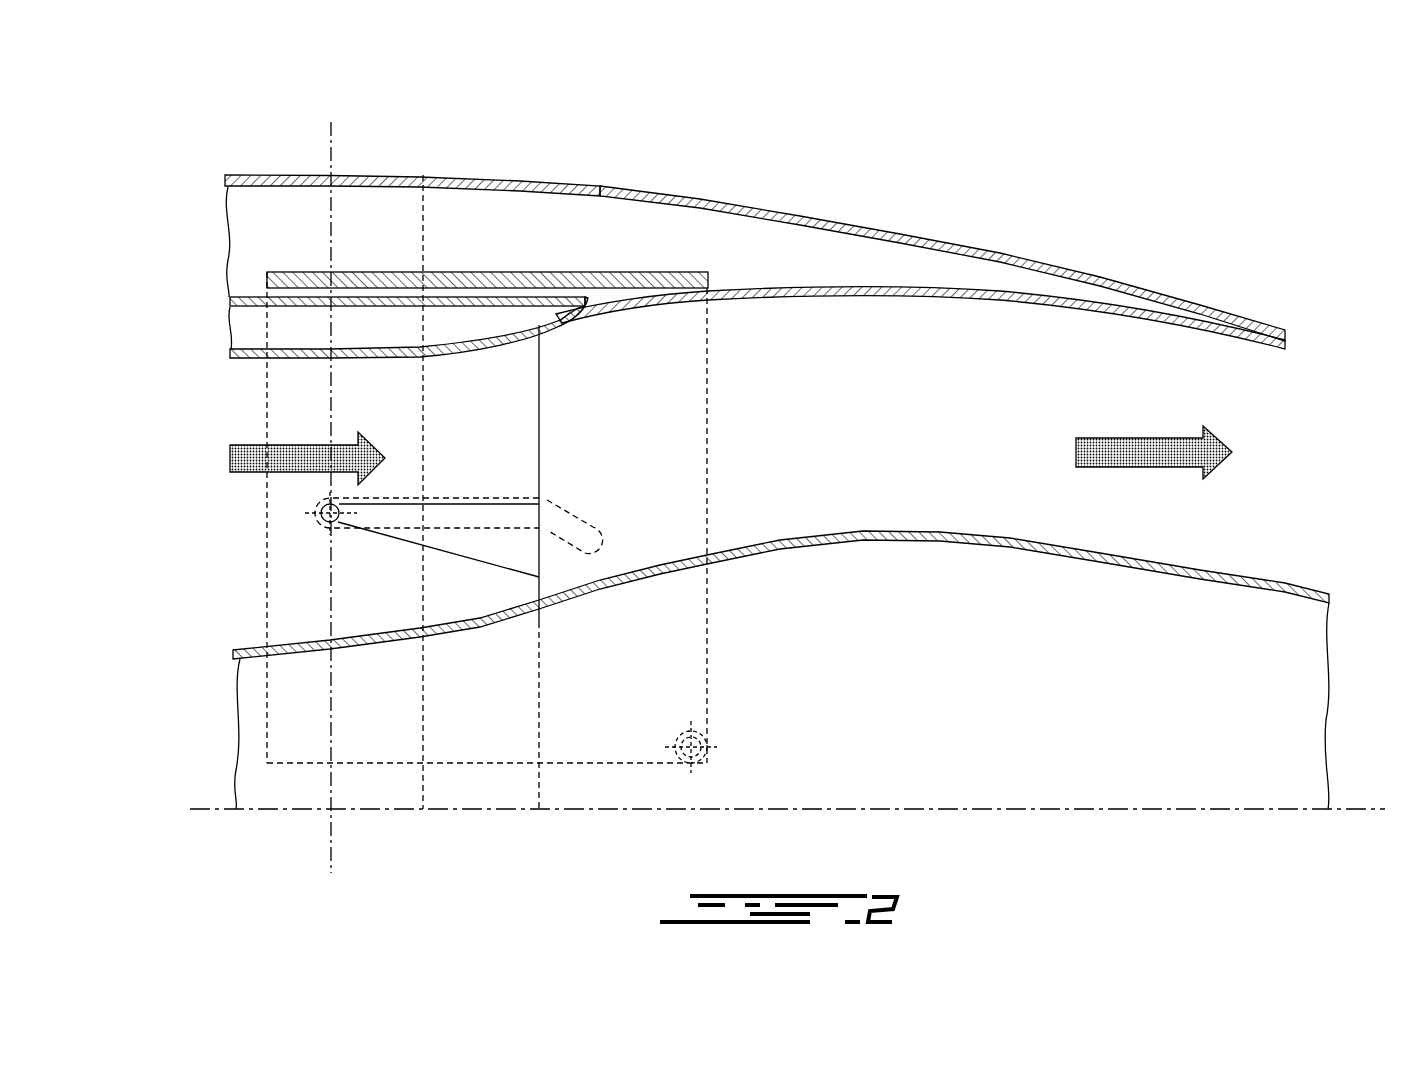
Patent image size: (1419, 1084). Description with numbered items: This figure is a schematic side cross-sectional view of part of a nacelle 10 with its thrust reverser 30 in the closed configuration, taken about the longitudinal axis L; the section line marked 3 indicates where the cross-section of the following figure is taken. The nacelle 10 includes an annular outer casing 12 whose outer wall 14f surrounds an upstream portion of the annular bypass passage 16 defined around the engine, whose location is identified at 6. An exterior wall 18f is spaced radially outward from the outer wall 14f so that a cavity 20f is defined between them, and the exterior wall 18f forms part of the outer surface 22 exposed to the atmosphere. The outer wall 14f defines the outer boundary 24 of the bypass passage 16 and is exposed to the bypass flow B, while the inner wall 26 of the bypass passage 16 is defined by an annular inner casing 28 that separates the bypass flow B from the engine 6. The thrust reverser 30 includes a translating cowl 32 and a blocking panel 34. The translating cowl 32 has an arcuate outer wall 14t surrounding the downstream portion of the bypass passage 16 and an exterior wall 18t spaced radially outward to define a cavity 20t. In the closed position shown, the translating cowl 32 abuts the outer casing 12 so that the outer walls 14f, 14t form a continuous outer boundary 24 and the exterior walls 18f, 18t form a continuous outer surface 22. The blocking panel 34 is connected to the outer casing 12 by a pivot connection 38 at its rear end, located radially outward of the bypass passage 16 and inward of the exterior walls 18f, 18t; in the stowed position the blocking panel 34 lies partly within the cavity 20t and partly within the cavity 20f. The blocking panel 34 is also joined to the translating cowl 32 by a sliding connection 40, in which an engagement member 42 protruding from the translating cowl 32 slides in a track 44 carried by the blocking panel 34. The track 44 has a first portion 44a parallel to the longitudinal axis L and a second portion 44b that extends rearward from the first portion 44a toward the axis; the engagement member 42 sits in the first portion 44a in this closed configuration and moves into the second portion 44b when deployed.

The nacelle 10 is at (1205, 233).
The outer casing 12 is at (233, 168).
The outer wall 14f is at (235, 357).
The outer wall 14t is at (905, 285).
The bypass passage 16 is at (880, 422).
The exterior wall 18f is at (283, 173).
The exterior wall 18t is at (603, 183).
The cavity 20f is at (290, 232).
The cavity 20t is at (787, 262).
The outer surface 22 is at (447, 173).
The outer boundary 24 is at (505, 348).
The inner wall 26 is at (248, 650).
The inner casing 28 is at (282, 663).
The thrust reverser 30 is at (720, 158).
The translating cowl 32 is at (1030, 250).
The blocking panel 34 is at (508, 262).
The pivot connection 38 is at (705, 755).
The sliding connection 40 is at (470, 545).
The engagement member 42 is at (322, 518).
The track 44 is at (508, 535).
The first portion 44a is at (382, 515).
The second portion 44b is at (597, 522).
The engine 6 is at (900, 702).
The bypass flow B is at (245, 457).
The longitudinal axis L is at (1362, 812).
The section line 3- 3 is at (376, 122).